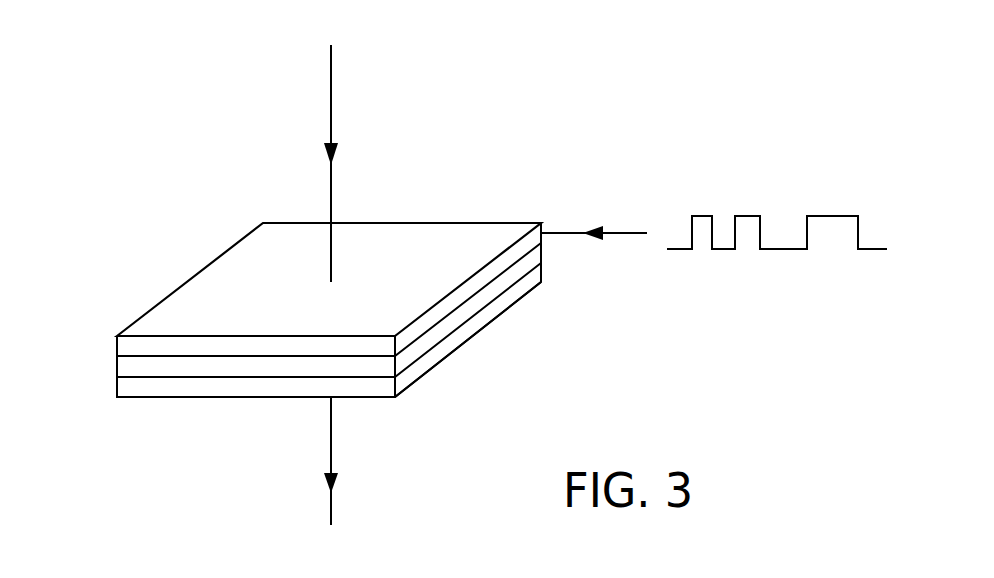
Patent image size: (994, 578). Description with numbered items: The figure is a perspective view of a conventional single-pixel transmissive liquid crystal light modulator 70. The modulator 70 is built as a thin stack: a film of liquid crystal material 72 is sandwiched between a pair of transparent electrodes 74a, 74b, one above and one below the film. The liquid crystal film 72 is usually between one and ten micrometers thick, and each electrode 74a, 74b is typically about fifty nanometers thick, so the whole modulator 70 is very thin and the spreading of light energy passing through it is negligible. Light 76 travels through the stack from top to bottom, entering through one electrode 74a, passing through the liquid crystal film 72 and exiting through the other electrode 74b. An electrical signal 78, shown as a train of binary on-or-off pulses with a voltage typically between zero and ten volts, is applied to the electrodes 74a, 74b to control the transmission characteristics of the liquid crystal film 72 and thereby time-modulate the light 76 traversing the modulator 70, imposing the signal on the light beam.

The transmissive liquid crystal light modulator 70 is at (136, 224).
The liquid crystal film 72 is at (117, 367).
The transparent electrode 74a is at (117, 347).
The transparent electrode 74b is at (117, 385).
The light 76 is at (331, 101).
The electrical signal 78 is at (759, 181).